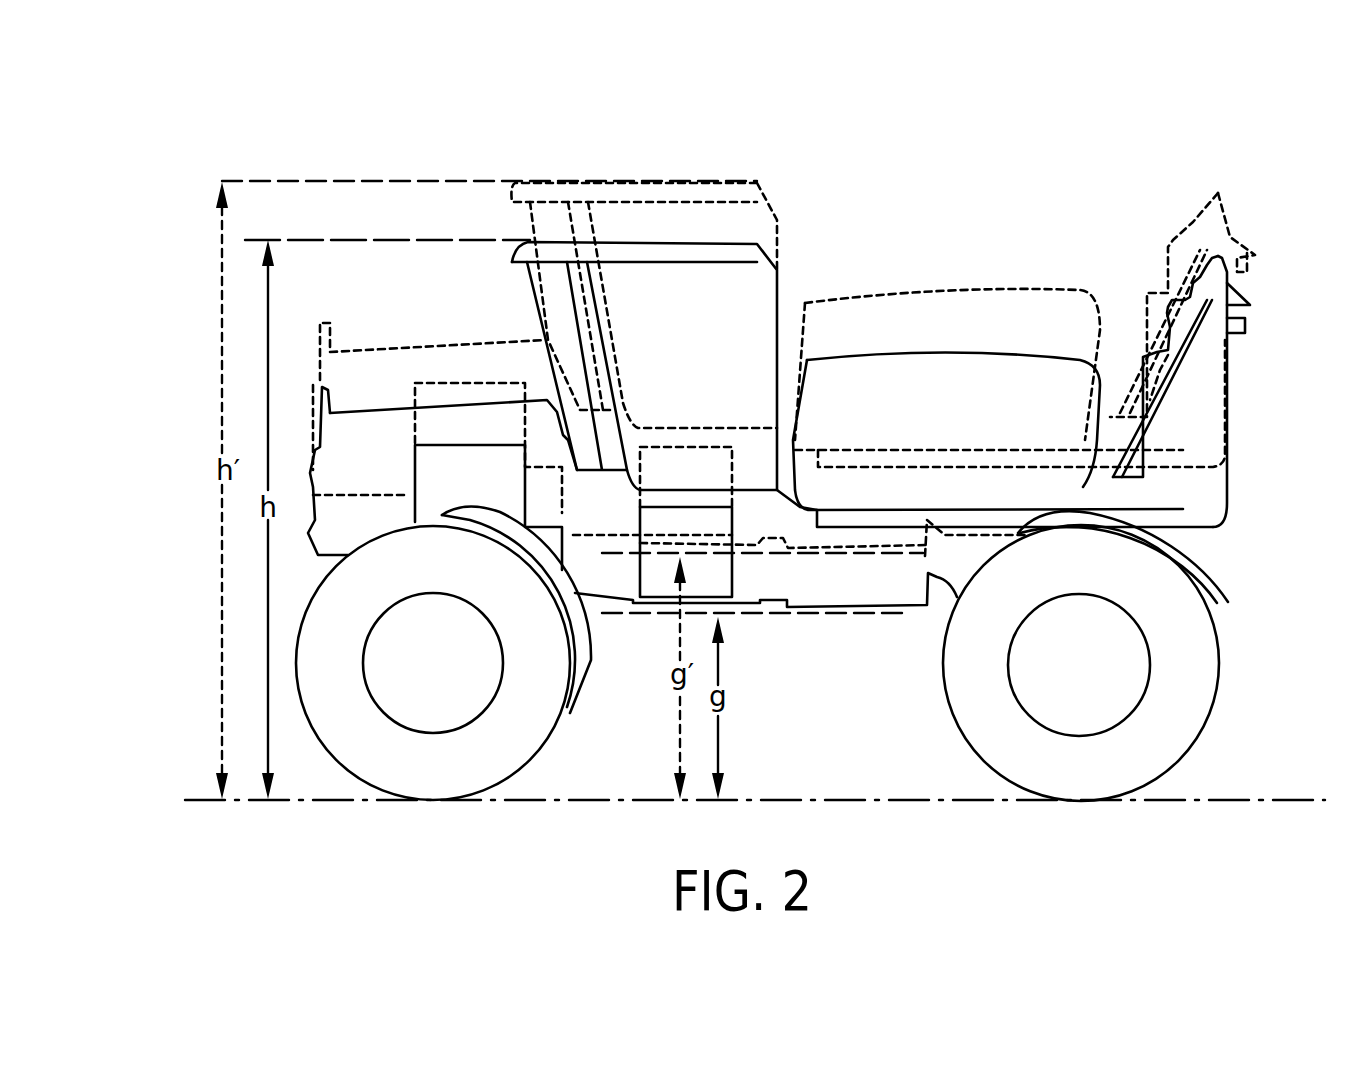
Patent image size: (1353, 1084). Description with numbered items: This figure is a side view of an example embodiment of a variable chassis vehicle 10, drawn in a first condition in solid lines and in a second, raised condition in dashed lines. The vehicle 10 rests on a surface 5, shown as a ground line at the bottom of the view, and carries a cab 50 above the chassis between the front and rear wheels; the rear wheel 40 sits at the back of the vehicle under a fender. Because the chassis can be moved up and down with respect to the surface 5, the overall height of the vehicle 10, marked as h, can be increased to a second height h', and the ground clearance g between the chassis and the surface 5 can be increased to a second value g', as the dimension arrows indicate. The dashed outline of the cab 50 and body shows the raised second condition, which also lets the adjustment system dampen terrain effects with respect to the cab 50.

The vehicle 10 is at (152, 158).
The cab 50 is at (720, 183).
The rear wheel 40 is at (1193, 652).
The surface 5 is at (798, 798).